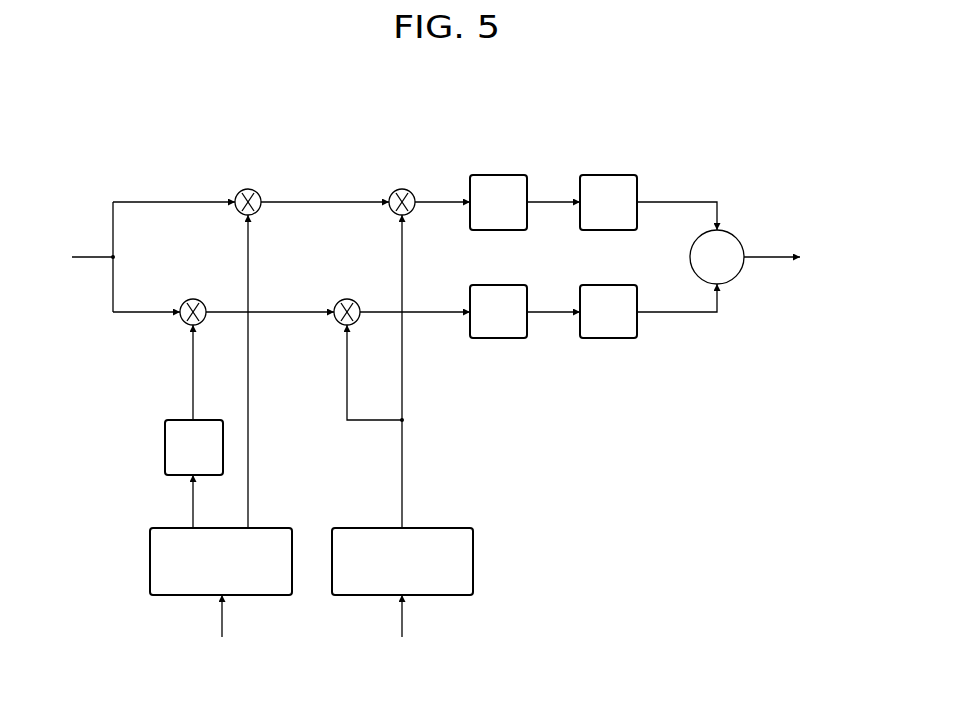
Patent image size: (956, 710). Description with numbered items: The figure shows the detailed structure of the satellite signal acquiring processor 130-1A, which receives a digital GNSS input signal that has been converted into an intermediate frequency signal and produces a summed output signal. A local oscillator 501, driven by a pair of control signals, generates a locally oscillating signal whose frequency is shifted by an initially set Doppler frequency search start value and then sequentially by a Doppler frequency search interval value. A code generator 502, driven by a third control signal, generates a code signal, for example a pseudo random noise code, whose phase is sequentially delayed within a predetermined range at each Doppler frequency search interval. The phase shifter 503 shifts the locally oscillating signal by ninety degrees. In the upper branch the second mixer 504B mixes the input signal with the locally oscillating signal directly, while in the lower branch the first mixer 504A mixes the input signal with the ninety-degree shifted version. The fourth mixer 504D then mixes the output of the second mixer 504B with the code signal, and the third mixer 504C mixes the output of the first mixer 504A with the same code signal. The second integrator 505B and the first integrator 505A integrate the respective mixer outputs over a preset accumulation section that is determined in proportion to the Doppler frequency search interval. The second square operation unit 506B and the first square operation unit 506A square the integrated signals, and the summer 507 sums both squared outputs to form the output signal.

The satellite signal acquiring processor 130-1A is at (750, 102).
The local oscillator 501 is at (150, 559).
The code generator 502 is at (473, 560).
The phase shifter 503 is at (165, 446).
The first mixer 504A is at (193, 298).
The second mixer 504B is at (248, 188).
The third mixer 504C is at (347, 298).
The fourth mixer 504D is at (402, 188).
The first integrator 505A is at (498, 283).
The second integrator 505B is at (498, 173).
The first square operation unit 506A is at (606, 283).
The second square operation unit 506B is at (606, 173).
The summer 507 is at (735, 236).